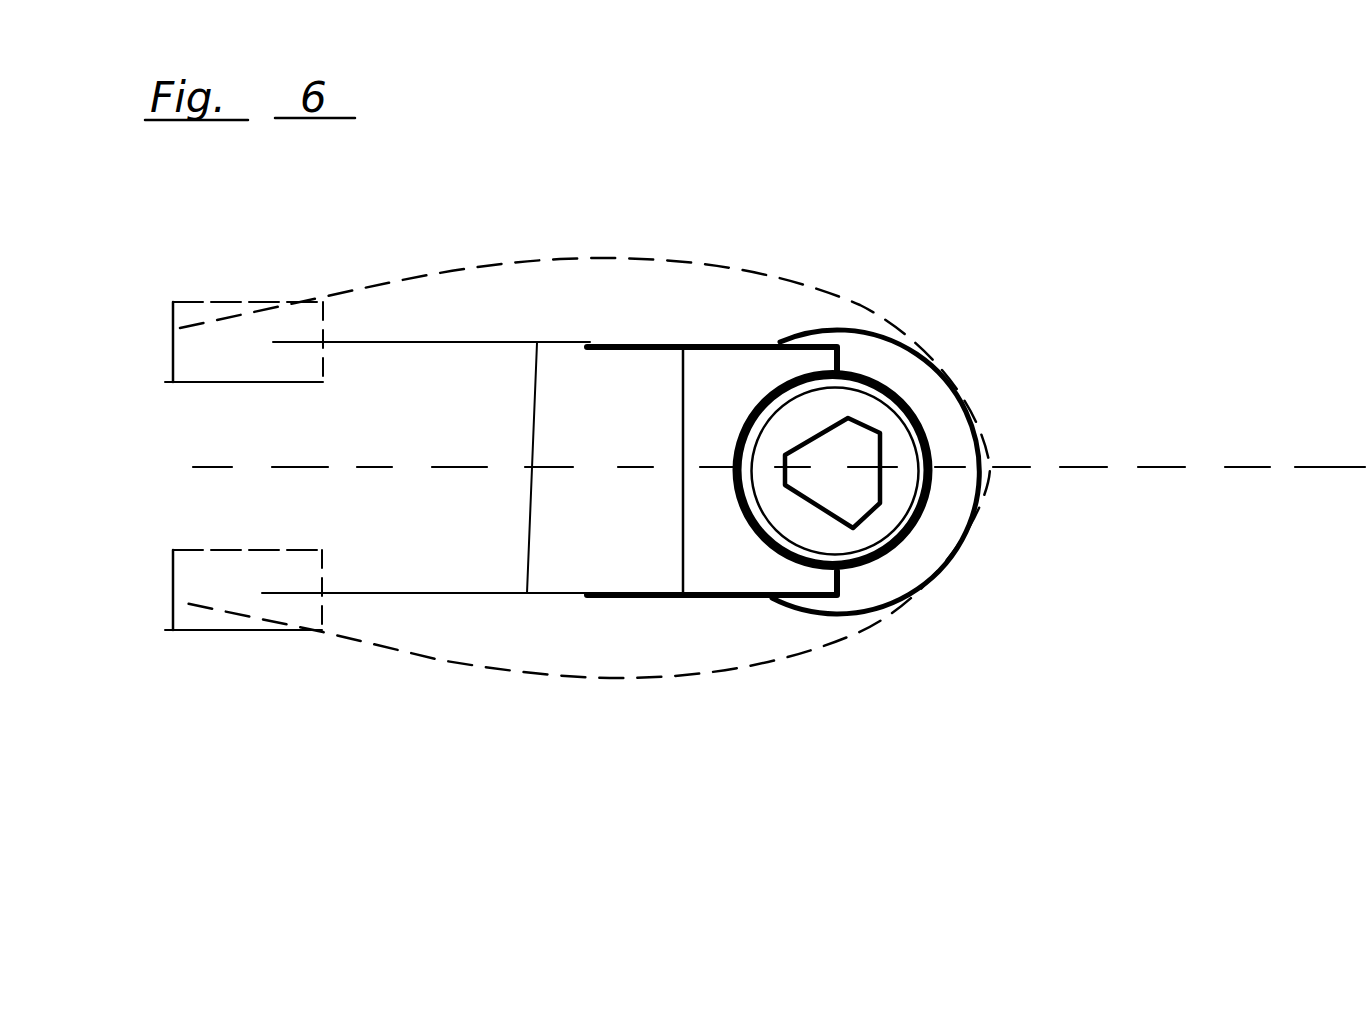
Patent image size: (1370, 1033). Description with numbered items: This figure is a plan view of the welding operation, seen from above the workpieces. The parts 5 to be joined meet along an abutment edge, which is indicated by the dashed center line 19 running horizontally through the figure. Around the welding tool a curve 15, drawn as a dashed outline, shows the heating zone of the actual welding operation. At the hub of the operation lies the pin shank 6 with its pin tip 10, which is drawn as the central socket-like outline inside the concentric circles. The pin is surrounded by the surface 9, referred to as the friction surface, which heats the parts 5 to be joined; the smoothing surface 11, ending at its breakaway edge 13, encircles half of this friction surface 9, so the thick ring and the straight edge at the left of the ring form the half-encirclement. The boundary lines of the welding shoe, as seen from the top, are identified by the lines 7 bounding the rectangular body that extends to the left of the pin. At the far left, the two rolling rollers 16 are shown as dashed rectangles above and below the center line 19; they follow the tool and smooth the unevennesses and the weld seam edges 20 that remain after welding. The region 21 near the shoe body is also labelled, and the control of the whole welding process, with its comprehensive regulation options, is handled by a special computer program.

The parts to be joined 5 is at (440, 572).
The pin shank 6 is at (920, 348).
The boundary lines of the welding shoe 7 is at (625, 597).
The friction surface 9 is at (888, 435).
The pin tip 10 is at (862, 480).
The smoothing surface 11 is at (727, 378).
The breakaway edge 13 is at (687, 418).
The heating zone curve 15 is at (483, 270).
The rolling rollers 16 is at (298, 362).
The dashed center line 19 is at (1085, 467).
The weld seam edges 20 is at (503, 593).
The body section 21 is at (612, 530).